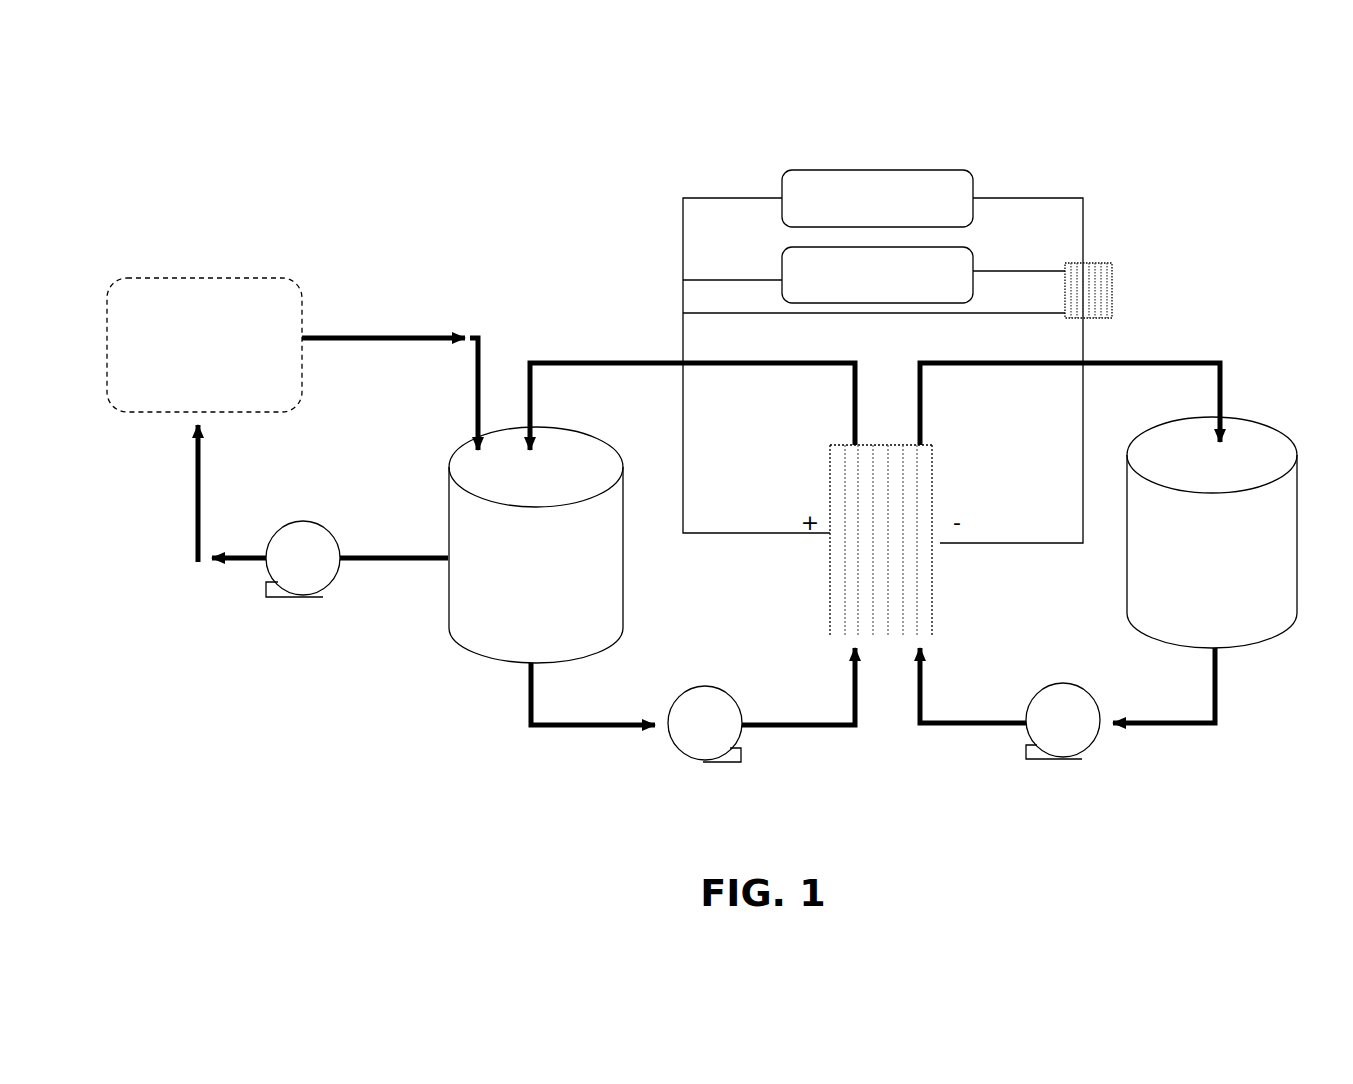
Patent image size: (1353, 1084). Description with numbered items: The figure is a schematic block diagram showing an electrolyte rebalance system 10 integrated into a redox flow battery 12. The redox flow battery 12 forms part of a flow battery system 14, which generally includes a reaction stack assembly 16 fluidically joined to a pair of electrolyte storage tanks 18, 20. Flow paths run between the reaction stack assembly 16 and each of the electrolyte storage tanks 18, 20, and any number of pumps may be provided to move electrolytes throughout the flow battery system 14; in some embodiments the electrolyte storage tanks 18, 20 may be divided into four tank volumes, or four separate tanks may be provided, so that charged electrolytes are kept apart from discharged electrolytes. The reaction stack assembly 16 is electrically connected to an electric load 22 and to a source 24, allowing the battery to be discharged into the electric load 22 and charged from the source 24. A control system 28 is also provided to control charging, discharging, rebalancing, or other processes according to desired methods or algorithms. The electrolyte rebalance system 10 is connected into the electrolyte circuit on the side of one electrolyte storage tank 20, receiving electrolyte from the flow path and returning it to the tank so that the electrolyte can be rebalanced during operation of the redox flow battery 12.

The electrolyte rebalance system 10 is at (302, 298).
The redox flow battery 12 is at (600, 280).
The flow battery system 14 is at (322, 167).
The reaction stack assembly 16 is at (848, 585).
The electrolyte storage tank 18 is at (1128, 590).
The electrolyte storage tank 20 is at (450, 503).
The electric load 22 is at (957, 248).
The source 24 is at (930, 170).
The control system 28 is at (1112, 270).